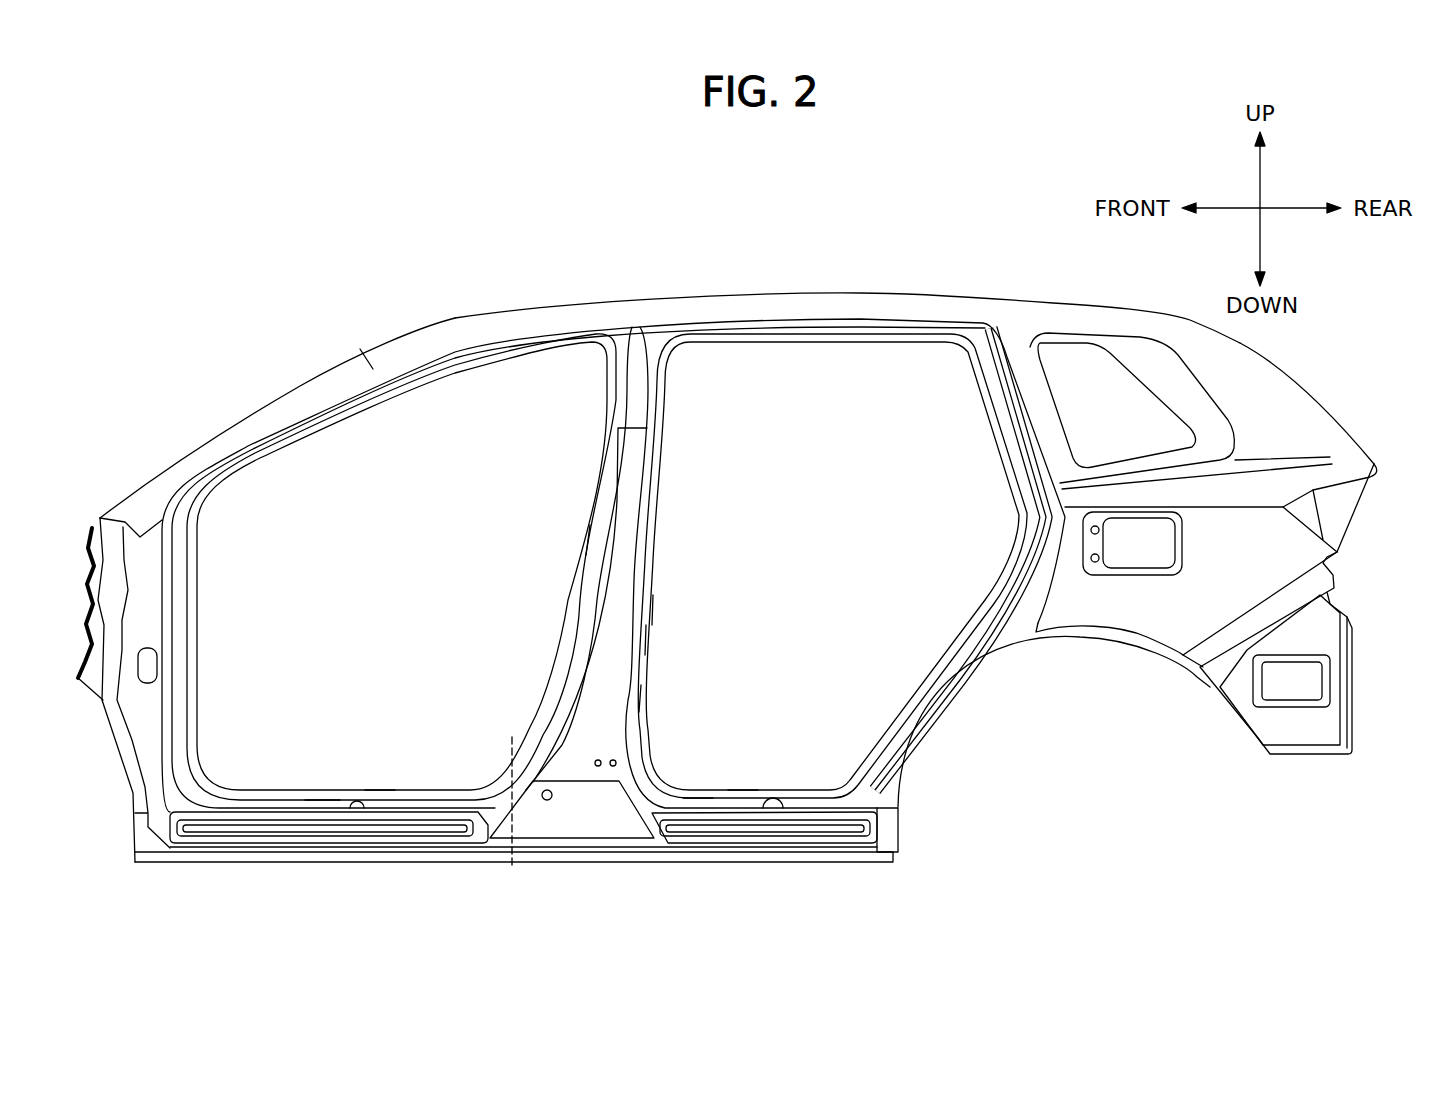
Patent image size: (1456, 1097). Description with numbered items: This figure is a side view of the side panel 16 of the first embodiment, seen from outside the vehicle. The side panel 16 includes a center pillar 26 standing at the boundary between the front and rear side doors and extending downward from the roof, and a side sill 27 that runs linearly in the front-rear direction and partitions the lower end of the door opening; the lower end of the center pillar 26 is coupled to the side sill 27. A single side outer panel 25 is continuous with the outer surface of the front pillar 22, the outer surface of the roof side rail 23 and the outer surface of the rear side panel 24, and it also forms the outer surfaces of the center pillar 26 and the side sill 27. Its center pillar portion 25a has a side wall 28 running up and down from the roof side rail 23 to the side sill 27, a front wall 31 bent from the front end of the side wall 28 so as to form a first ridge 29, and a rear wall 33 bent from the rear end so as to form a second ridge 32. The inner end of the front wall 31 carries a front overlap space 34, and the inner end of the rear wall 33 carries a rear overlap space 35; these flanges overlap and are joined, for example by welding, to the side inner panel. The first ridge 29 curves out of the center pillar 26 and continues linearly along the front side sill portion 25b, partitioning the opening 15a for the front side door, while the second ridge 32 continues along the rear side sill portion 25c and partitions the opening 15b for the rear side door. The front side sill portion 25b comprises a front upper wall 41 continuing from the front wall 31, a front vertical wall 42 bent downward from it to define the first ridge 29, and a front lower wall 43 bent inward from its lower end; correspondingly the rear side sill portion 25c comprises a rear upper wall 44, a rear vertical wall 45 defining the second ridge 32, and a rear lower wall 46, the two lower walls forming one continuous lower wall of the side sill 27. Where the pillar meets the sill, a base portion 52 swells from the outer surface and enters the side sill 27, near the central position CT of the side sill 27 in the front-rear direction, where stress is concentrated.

The opening for the front side door 15a is at (357, 808).
The opening for the rear side door 15b is at (773, 806).
The side panel 16 is at (1353, 557).
The front pillar 22 is at (245, 417).
The roof side rail 23 is at (805, 293).
The rear side panel 24 is at (1288, 382).
The side outer panel 25 is at (425, 314).
The center pillar portion 25a is at (652, 610).
The front side sill portion 25b is at (380, 790).
The rear side sill portion 25c is at (743, 788).
The center pillar 26 is at (660, 500).
The side sill 27 is at (695, 860).
The side wall 28 is at (613, 645).
The first ridge 29 is at (613, 393).
The front wall 31 is at (590, 540).
The second ridge 32 is at (641, 697).
The rear wall 33 is at (646, 638).
The front overlap space 34 is at (590, 470).
The rear overlap space 35 is at (667, 433).
The front upper wall 41 is at (323, 800).
The front vertical wall 42 is at (425, 848).
The front lower wall 43 is at (263, 848).
The rear upper wall 44 is at (698, 798).
The rear vertical wall 45 is at (863, 860).
The rear lower wall 46 is at (757, 852).
The base portion 52 is at (585, 832).
The central position CT is at (512, 752).